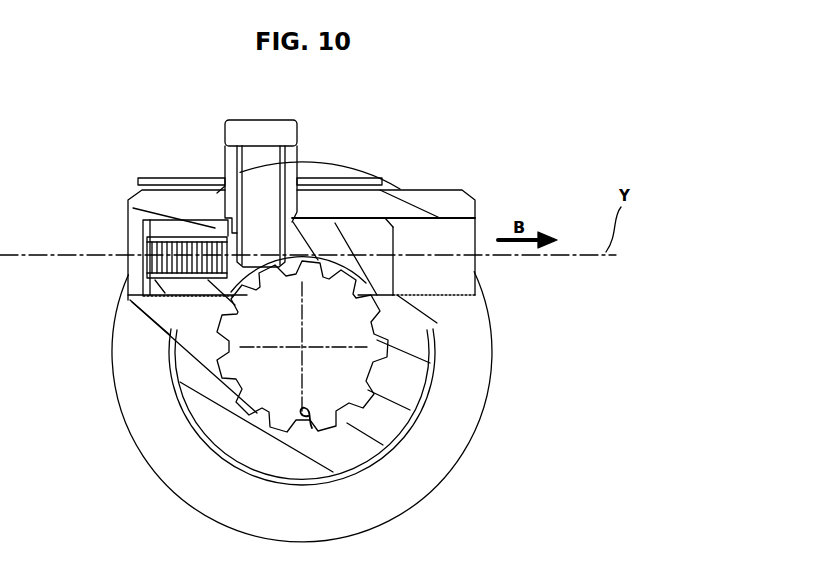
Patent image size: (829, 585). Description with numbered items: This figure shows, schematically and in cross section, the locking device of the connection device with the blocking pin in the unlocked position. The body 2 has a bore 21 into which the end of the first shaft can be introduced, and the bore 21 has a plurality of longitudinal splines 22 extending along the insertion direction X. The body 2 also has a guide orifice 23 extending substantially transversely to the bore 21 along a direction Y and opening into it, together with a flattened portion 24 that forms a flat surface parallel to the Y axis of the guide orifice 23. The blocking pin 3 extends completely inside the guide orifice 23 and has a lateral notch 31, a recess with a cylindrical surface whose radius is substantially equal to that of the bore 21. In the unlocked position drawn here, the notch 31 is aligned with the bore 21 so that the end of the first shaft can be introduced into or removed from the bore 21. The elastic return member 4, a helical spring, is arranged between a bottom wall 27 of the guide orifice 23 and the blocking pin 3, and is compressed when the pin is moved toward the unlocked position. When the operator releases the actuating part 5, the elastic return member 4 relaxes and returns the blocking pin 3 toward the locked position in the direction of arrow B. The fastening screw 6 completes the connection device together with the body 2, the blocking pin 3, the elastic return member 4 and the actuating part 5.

The body 2 is at (437, 403).
The blocking pin 3 is at (337, 238).
The elastic return member 4 is at (183, 222).
The actuating part 5 is at (178, 168).
The fastening screw 6 is at (265, 108).
The bore 21 is at (338, 383).
The longitudinal splines 22 is at (312, 428).
The guide orifice 23 is at (464, 264).
The flattened portion 24 is at (436, 180).
The bottom wall 27 is at (137, 233).
The lateral notch 31 is at (327, 268).